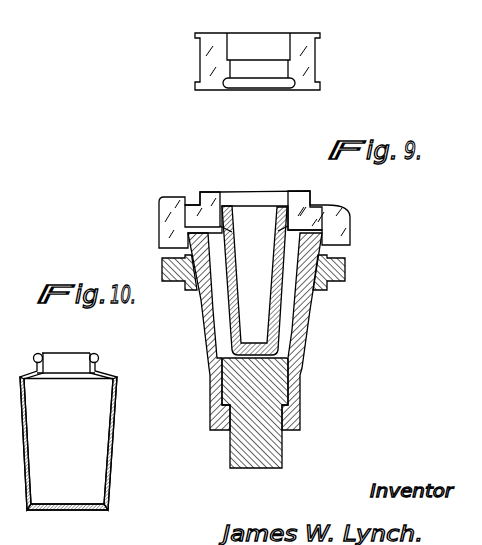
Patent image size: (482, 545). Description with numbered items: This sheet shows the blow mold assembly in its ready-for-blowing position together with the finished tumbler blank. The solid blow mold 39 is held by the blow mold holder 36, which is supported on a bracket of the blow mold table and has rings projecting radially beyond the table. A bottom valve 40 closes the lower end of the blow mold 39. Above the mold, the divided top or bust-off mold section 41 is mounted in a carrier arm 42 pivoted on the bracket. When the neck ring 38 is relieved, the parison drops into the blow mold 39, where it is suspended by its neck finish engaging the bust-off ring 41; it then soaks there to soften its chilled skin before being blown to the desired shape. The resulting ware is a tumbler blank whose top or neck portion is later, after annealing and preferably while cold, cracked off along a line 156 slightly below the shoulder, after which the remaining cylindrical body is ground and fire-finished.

In FIG. 9, the neck ring 38 is at (308, 60).
In FIG. 9, the carrier arm 42 is at (346, 220).
In FIG. 9, the bust-off mold section 41 is at (297, 191).
In FIG. 9, the blow mold 39 is at (307, 313).
In FIG. 9, the bottom valve 40 is at (283, 446).
In FIG. 9, the blow mold holder 36 is at (346, 268).
In FIG. 10, the cracking-off line 156 is at (110, 378).